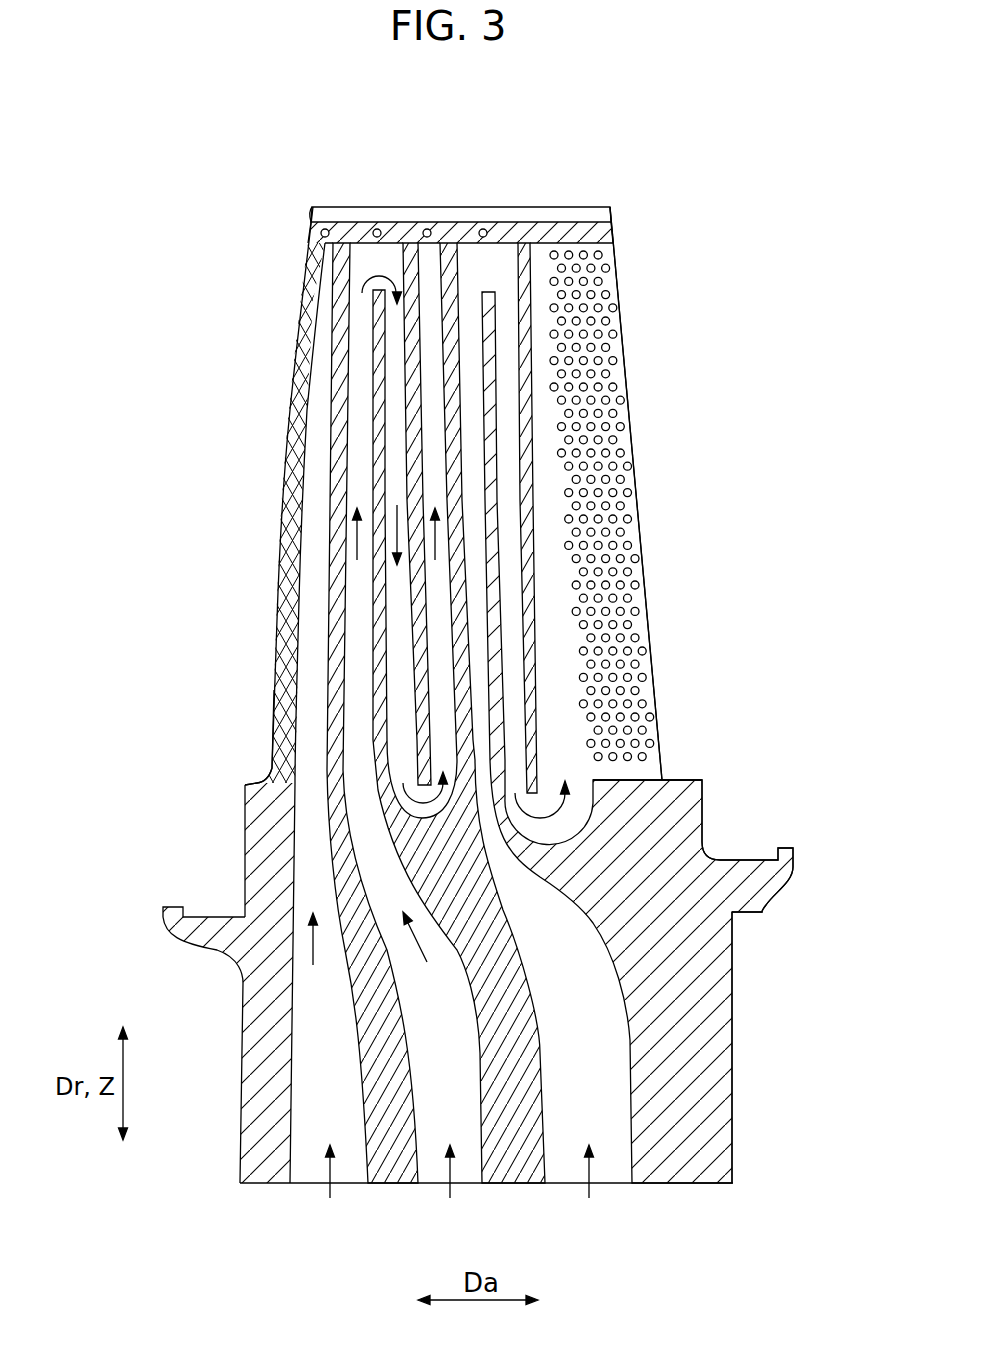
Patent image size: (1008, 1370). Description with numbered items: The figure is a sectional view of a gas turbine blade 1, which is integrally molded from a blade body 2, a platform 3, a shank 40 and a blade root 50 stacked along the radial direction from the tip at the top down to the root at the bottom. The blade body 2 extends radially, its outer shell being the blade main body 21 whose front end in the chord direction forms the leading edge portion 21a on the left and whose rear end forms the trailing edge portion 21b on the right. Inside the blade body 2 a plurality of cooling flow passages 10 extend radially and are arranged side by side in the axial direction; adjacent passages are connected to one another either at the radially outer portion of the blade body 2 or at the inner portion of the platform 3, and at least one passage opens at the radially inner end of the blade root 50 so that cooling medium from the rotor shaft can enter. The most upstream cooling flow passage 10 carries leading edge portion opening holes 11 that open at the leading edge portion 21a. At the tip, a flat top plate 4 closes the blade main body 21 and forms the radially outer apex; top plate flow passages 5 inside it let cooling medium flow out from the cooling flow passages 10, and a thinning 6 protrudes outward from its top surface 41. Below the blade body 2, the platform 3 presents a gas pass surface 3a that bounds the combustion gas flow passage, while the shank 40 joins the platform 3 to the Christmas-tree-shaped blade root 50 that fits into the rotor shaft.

The blade 1 is at (246, 151).
The blade body 2 is at (627, 301).
The platform 3 is at (705, 800).
The gas pass surface 3a is at (693, 778).
The top plate 4 is at (625, 232).
The top plate flow passage 5 is at (483, 228).
The thinning 6 is at (580, 217).
The cooling flow passage 10 is at (354, 687).
The leading edge portion opening hole 11 is at (283, 570).
The blade main body 21 is at (305, 292).
The leading edge portion 21a is at (275, 725).
The trailing edge portion 21b is at (660, 702).
The shank 40 is at (700, 985).
The top surface 41 is at (312, 212).
The blade root 50 is at (735, 1136).